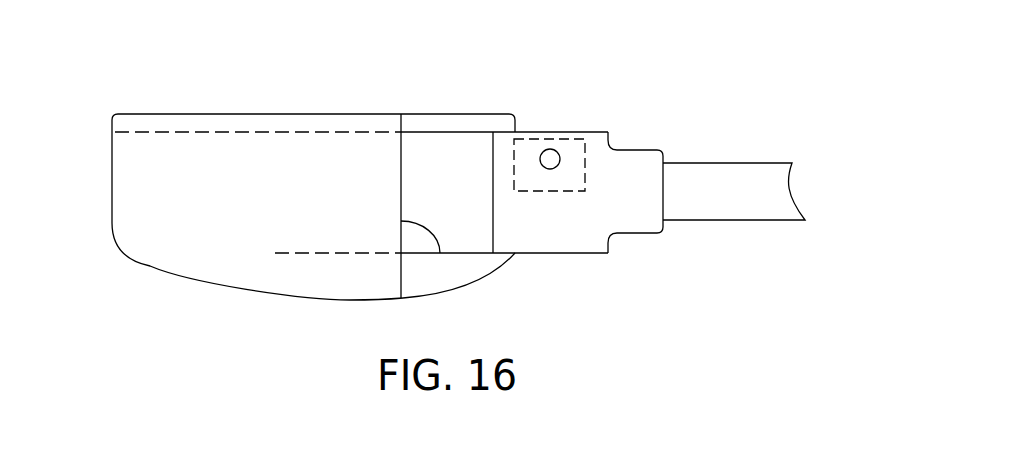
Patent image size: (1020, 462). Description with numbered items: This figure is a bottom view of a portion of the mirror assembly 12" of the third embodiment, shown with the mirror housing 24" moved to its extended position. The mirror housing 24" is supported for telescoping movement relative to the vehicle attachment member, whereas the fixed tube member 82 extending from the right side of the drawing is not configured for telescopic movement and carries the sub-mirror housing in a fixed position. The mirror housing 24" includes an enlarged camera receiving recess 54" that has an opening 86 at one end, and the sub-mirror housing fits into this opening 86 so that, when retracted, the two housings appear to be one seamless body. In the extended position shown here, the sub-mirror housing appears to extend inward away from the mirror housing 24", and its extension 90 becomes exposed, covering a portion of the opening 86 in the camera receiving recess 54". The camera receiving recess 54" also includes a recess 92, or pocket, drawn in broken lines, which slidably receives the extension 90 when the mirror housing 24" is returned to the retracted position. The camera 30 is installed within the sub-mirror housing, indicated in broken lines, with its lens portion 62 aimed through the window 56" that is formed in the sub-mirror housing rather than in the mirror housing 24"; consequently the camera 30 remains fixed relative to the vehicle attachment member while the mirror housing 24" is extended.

The mirror assembly 12 is at (688, 93).
The mirror housing 24 is at (112, 172).
The camera receiving recess 54 is at (218, 245).
The recess 92 is at (336, 256).
The extension 90 is at (447, 162).
The opening 86 is at (428, 256).
The camera 30 is at (568, 173).
The lens portion 62 is at (543, 151).
The window 56 is at (541, 160).
The fixed tube member 82 is at (740, 197).